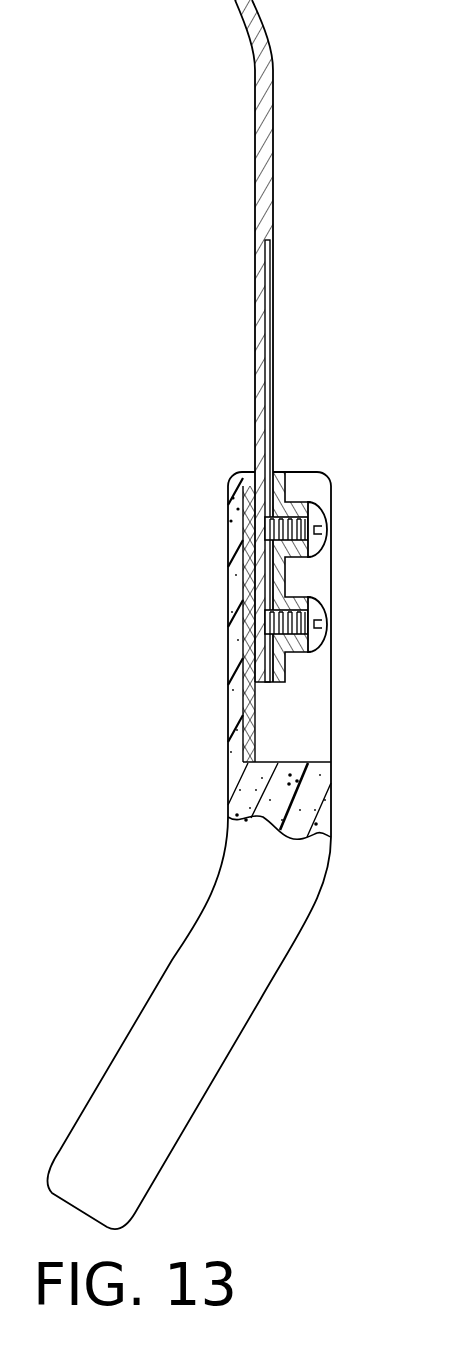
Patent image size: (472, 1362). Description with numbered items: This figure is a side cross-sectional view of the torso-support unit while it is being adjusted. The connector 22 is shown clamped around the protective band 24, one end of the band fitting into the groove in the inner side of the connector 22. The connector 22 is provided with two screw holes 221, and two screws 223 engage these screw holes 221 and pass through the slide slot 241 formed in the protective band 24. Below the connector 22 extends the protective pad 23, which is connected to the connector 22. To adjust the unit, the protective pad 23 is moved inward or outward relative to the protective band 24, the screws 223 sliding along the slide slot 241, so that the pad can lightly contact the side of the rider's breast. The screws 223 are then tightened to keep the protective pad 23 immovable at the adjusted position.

The protective band 24 is at (265, 118).
The slide slot 241 is at (262, 338).
The connector 22 is at (285, 502).
The screw 223 is at (317, 518).
The screw hole 221 is at (293, 652).
The protective pad 23 is at (270, 923).